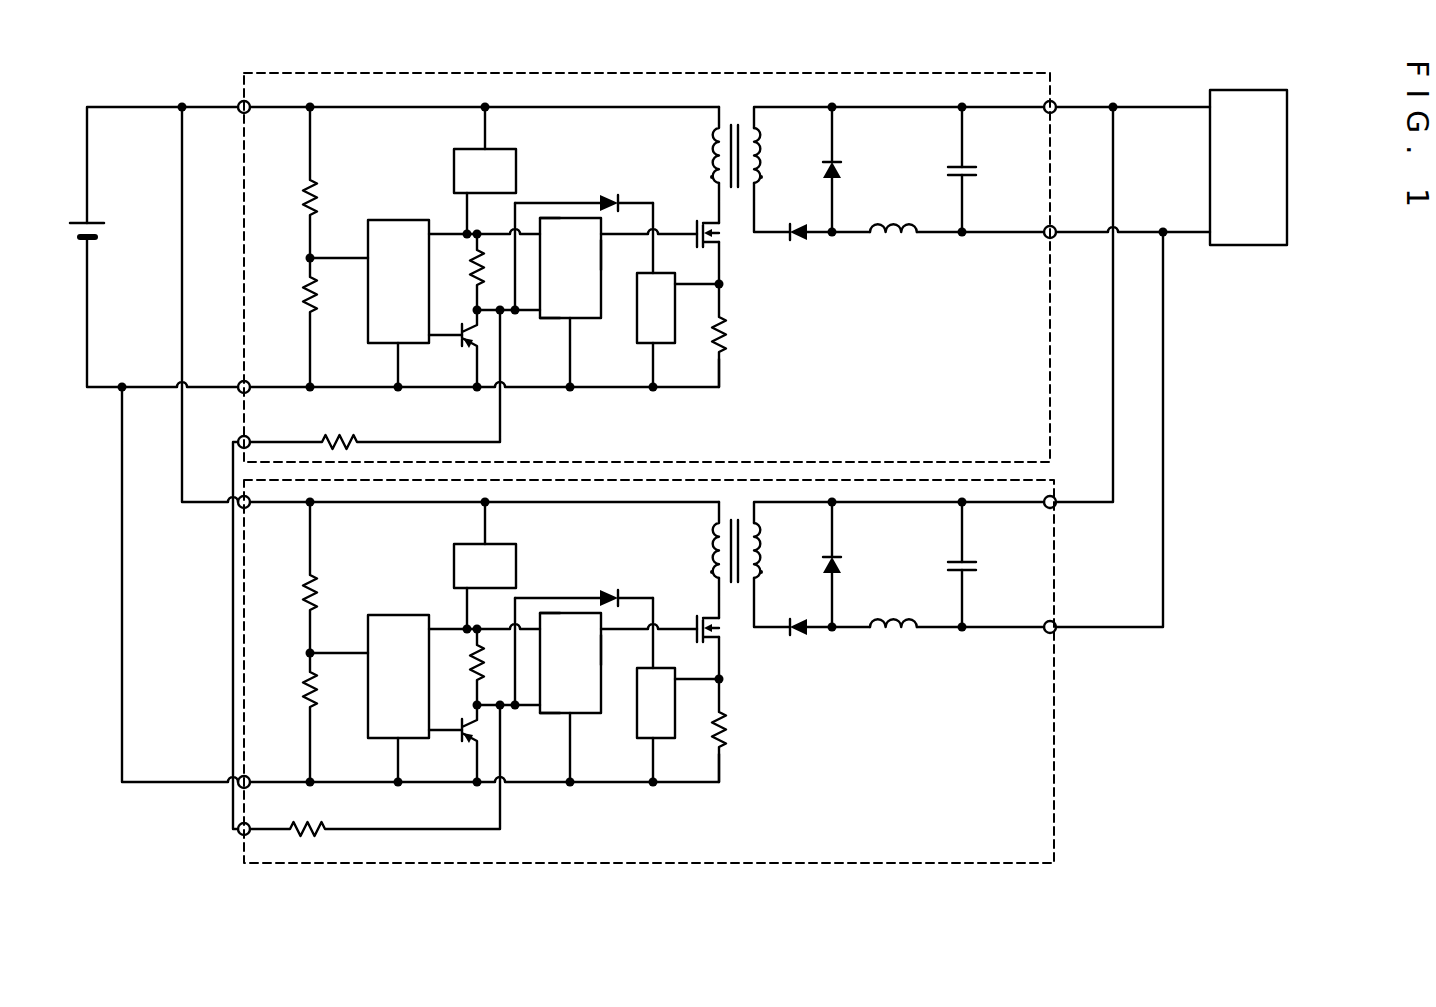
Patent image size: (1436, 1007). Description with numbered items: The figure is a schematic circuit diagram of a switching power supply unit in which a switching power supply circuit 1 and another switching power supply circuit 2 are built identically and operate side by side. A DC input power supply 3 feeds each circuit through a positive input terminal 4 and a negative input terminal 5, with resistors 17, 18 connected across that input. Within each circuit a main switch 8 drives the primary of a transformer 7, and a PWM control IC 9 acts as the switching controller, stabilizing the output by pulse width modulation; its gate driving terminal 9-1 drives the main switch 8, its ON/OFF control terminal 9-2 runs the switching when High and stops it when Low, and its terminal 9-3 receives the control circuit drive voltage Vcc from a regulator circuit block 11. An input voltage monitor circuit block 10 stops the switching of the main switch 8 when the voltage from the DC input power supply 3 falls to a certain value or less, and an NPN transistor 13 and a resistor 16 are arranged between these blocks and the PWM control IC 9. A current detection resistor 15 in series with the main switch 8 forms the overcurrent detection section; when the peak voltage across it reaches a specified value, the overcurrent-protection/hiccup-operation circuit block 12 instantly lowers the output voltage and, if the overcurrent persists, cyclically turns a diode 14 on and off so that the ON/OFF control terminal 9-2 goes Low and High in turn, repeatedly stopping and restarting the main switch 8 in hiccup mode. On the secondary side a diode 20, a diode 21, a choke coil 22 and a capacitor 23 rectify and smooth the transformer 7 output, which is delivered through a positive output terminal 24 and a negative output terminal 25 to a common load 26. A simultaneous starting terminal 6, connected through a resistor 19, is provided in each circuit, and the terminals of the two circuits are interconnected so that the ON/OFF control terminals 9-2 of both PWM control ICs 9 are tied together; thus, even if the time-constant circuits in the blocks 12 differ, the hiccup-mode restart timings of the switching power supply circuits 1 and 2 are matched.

The switching power supply circuit 1 is at (665, 73).
The switching power supply circuit 2 is at (1056, 835).
The DC input power supply 3 is at (104, 237).
The positive input terminal 4 is at (240, 103).
The negative input terminal 5 is at (240, 383).
The simultaneous starting terminal 6 is at (238, 440).
The transformer 7 is at (728, 130).
The main switch 8 is at (706, 253).
The PWM control IC 9 is at (570, 492).
The gate driving terminal 9-1 is at (584, 452).
The ON/OFF control terminal 9-2 is at (557, 503).
The control circuit drive voltage terminal 9-3 is at (557, 429).
The input voltage monitor circuit block 10 is at (399, 222).
The regulator circuit block 11 is at (516, 170).
The overcurrent-protection/hiccup-operation circuit block 12 is at (668, 342).
The NPN transistor 13 is at (462, 346).
The diode 14 is at (610, 196).
The current detection resistor 15 is at (728, 340).
The resistor 16 is at (472, 279).
The resistor 17 is at (302, 200).
The resistor 18 is at (302, 298).
The resistor 19 is at (348, 437).
The diode 20 is at (797, 242).
The diode 21 is at (841, 168).
The choke coil 22 is at (893, 237).
The capacitor 23 is at (980, 170).
The positive output terminal 24 is at (1056, 103).
The negative output terminal 25 is at (1056, 228).
The load 26 is at (1245, 107).